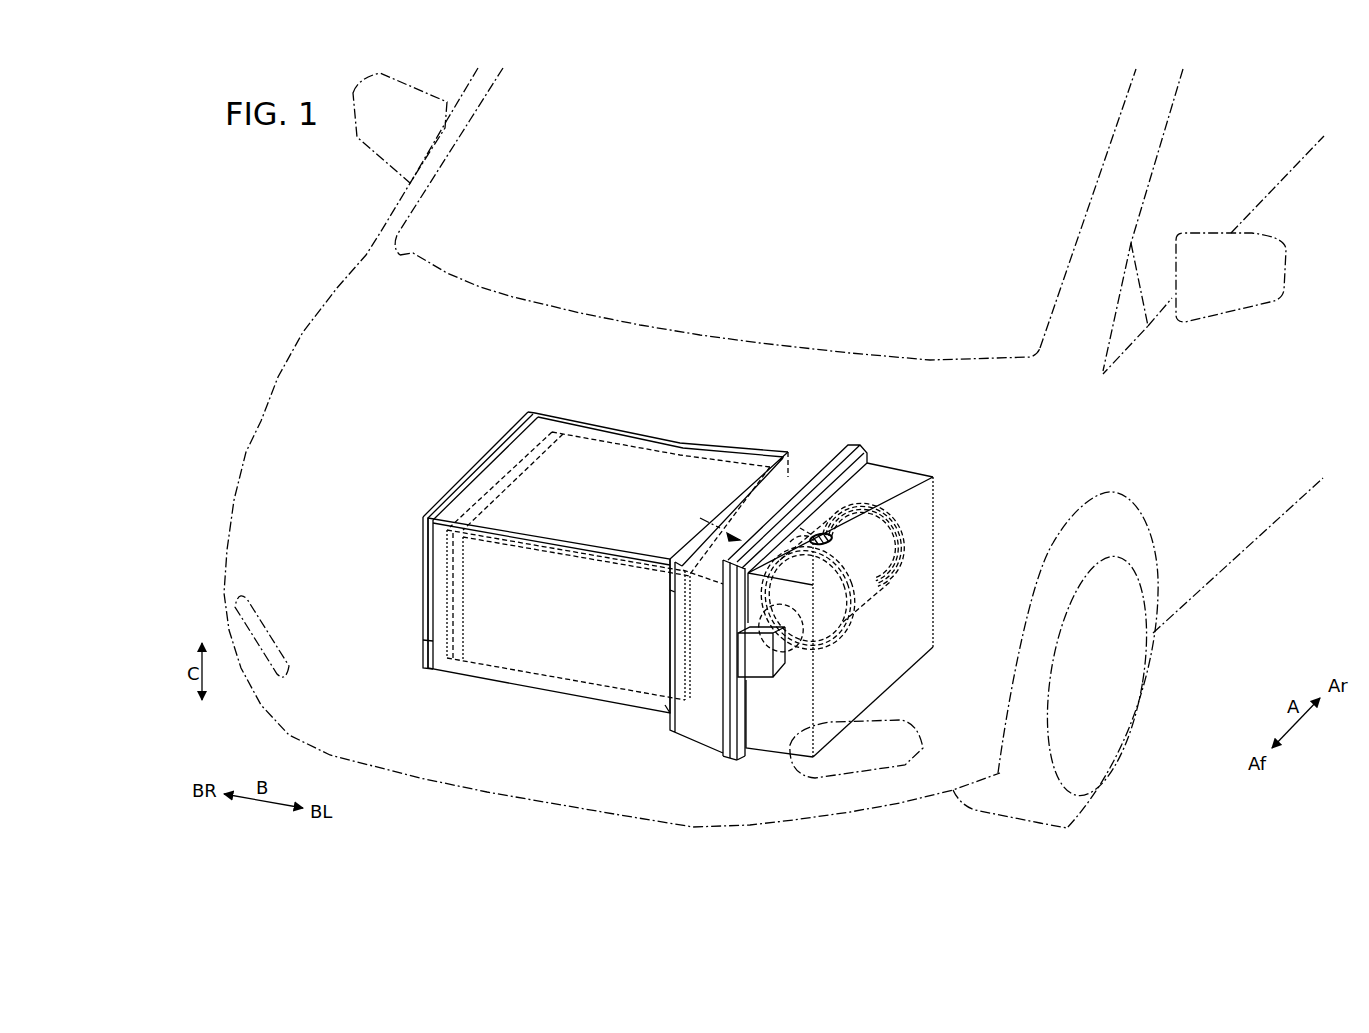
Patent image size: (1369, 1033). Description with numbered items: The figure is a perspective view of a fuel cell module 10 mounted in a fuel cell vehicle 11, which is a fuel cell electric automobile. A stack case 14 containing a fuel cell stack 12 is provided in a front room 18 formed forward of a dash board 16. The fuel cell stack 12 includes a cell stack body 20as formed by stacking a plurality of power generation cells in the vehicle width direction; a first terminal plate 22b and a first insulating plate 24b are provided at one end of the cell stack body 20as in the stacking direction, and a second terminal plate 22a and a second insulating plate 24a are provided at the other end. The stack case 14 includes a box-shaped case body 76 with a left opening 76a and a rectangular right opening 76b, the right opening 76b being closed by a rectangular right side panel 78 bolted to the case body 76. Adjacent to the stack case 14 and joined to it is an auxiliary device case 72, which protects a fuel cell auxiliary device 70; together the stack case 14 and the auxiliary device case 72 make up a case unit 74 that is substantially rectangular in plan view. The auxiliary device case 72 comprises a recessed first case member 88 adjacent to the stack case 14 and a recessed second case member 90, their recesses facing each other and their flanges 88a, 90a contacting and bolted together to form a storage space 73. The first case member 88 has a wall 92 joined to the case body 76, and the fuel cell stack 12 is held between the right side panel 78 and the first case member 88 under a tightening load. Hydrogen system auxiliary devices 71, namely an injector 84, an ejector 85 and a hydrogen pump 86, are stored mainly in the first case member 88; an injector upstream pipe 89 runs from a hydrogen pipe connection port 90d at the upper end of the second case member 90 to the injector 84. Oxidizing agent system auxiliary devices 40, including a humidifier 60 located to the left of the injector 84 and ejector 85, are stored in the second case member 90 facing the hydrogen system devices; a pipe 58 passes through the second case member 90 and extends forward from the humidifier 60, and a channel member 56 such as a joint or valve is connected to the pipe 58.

The fuel cell module 10 is at (382, 560).
The fuel cell vehicle 11 is at (240, 185).
The fuel cell stack 12 is at (660, 450).
The stack case 14 is at (713, 447).
The dash board 16 is at (675, 347).
The front room 18 is at (873, 403).
The cell stack body 20as is at (630, 460).
The second terminal plate 22a is at (686, 622).
The first terminal plate 22b is at (460, 590).
The second insulating plate 24a is at (690, 655).
The first insulating plate 24b is at (448, 622).
The oxidizing agent system auxiliary devices 40 is at (915, 574).
The channel member 56 is at (780, 660).
The pipe 58 is at (800, 648).
The humidifier 60 is at (858, 588).
The fuel cell auxiliary device 70 is at (877, 484).
The hydrogen system auxiliary devices 71 is at (700, 518).
The auxiliary device case 72 is at (788, 445).
The storage space 73 is at (920, 471).
The case unit 74 is at (770, 397).
The case body 76 is at (507, 675).
The left opening 76a is at (700, 680).
The right opening 76b is at (422, 647).
The right side panel 78 is at (485, 465).
The injector 84 is at (730, 508).
The ejector 85 is at (678, 557).
The hydrogen pump 86 is at (668, 593).
The first case member 88 is at (690, 740).
The flange 88a is at (725, 760).
The injector upstream pipe 89 is at (808, 525).
The second case member 90 is at (773, 737).
The flange 90a is at (748, 754).
The hydrogen pipe connection port 90d is at (833, 539).
The wall 92 is at (690, 732).